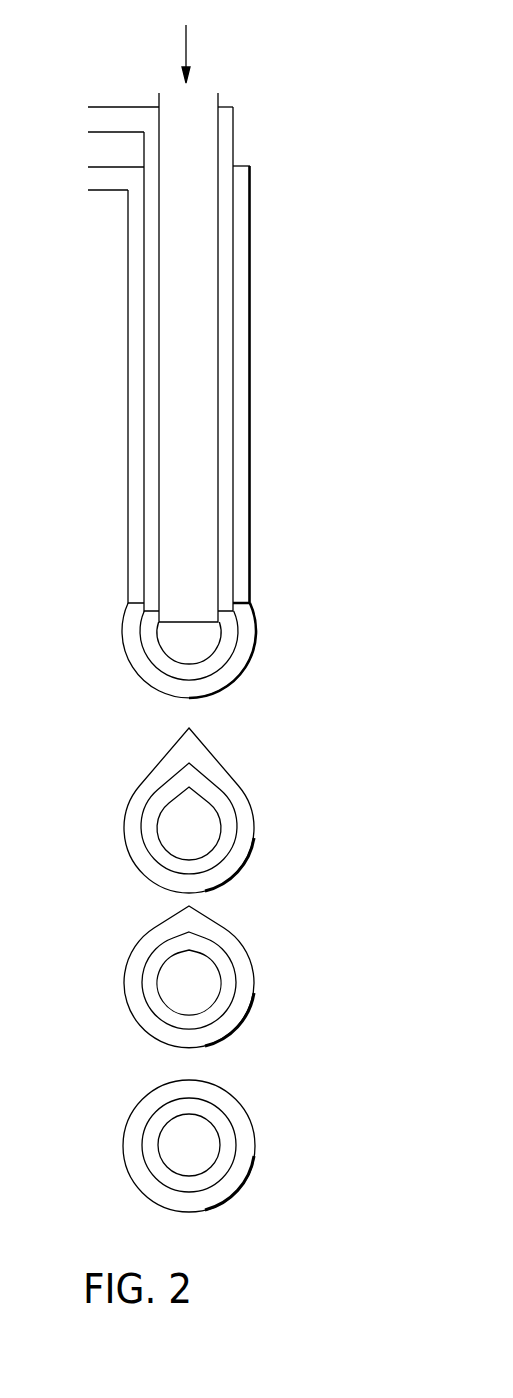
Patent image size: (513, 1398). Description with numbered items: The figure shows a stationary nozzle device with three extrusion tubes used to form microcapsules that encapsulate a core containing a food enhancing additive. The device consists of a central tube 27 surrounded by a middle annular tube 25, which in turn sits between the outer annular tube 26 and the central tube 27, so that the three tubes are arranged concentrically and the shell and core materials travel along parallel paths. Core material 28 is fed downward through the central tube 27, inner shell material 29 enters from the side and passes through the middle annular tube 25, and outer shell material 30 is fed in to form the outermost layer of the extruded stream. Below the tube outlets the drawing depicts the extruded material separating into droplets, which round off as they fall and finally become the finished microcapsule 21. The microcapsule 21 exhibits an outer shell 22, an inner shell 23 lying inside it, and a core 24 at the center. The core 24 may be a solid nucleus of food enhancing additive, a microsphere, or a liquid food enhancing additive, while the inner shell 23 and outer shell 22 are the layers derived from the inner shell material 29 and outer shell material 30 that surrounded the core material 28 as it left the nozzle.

The microcapsule 21 is at (176, 1159).
The outer shell 22 is at (227, 1089).
The inner shell 23 is at (205, 1138).
The core 24 is at (197, 1192).
The middle annular tube 25 is at (233, 243).
The outer annular tube 26 is at (249, 330).
The central tube 27 is at (217, 445).
The core material 28 is at (188, 41).
The inner shell material 29 is at (82, 119).
The outer shell material 30 is at (82, 179).